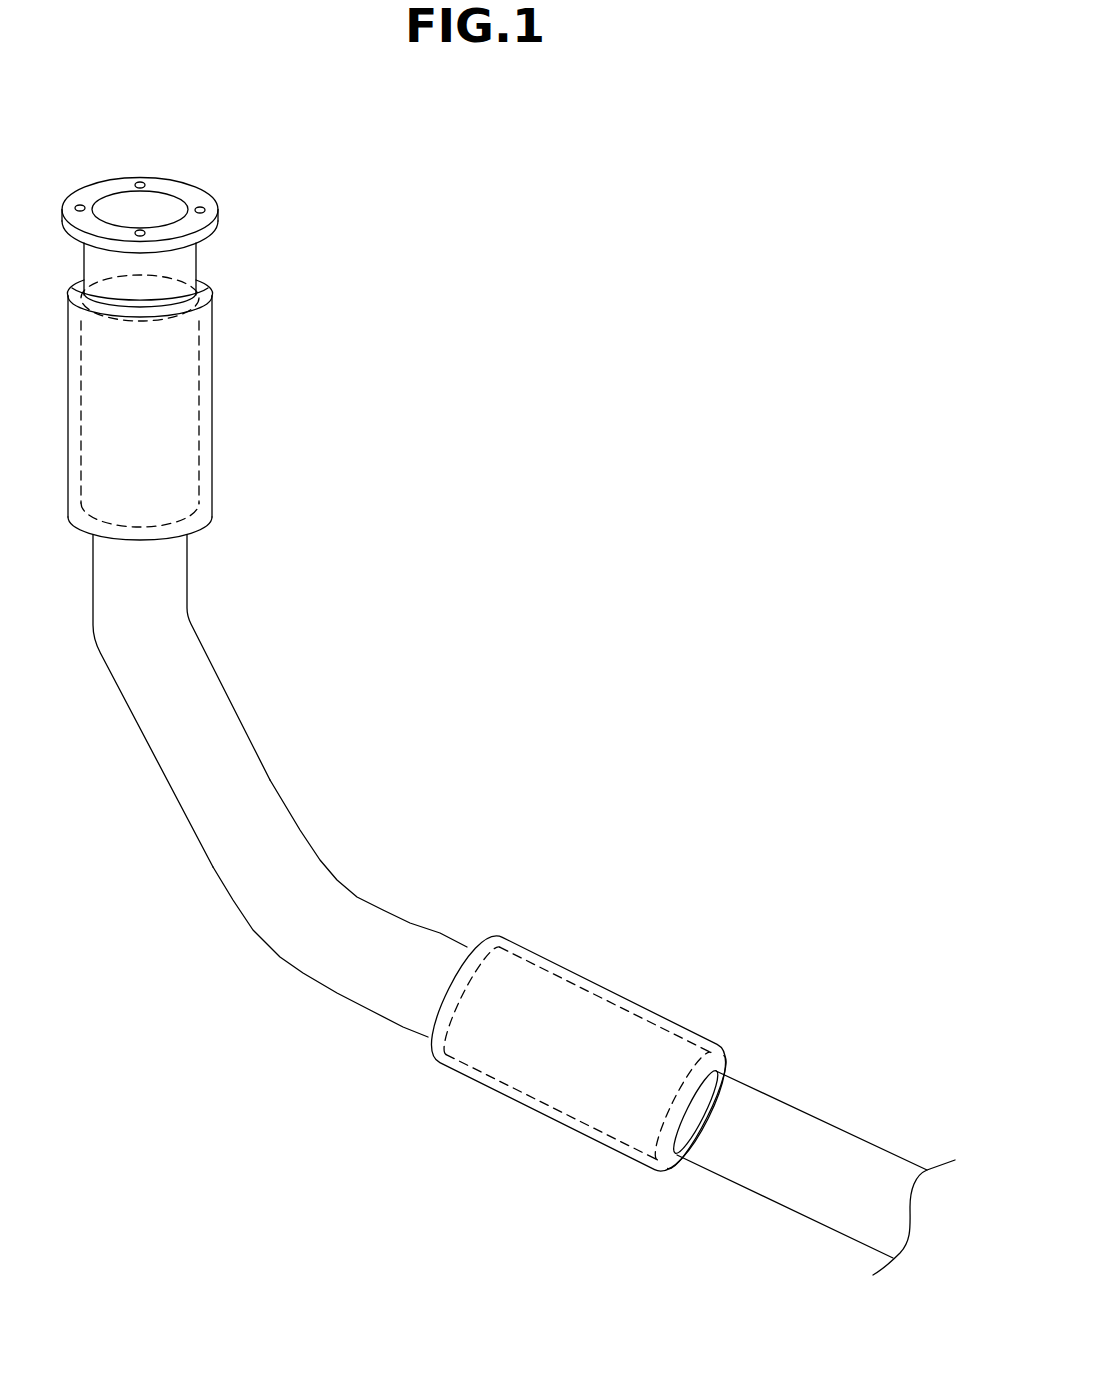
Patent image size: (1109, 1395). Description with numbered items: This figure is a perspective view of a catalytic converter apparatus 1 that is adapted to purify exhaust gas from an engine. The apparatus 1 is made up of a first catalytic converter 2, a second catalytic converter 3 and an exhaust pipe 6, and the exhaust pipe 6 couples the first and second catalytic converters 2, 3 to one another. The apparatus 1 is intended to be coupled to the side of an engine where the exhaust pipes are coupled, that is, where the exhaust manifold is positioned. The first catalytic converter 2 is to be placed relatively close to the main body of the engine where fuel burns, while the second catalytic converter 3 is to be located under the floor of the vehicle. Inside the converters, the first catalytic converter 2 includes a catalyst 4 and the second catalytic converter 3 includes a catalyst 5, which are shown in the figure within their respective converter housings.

The catalytic converter apparatus 1 is at (322, 673).
The first catalytic converter 2 is at (227, 332).
The second catalytic converter 3 is at (558, 945).
The catalyst 4 is at (170, 415).
The catalyst 5 is at (600, 1037).
The exhaust pipe 6 is at (207, 823).